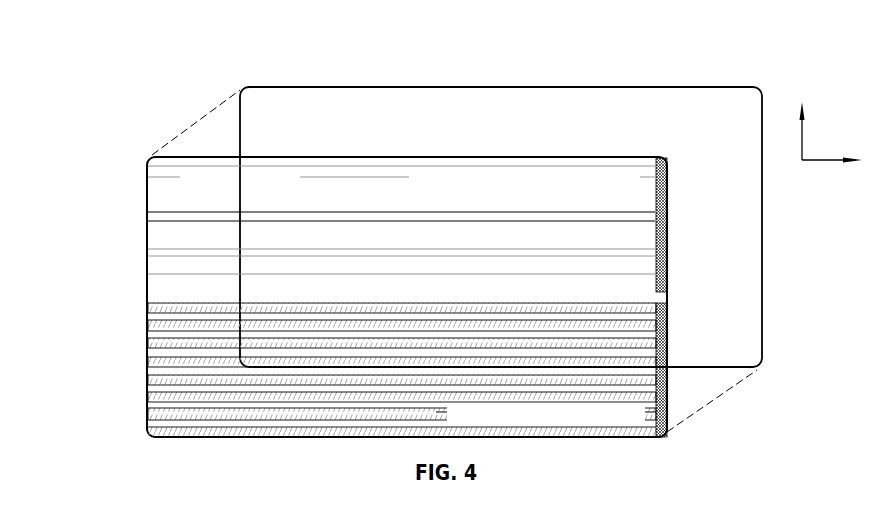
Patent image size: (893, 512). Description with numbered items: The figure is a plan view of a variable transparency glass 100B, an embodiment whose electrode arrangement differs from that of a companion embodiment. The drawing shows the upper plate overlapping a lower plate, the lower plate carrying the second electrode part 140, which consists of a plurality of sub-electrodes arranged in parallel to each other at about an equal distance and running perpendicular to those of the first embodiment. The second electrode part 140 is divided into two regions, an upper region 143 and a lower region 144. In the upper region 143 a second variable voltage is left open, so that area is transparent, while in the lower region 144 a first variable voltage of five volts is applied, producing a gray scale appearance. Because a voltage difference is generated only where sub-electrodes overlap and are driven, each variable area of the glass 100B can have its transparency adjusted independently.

The variable transparency glass 100B is at (452, 45).
The second electrode part 140 is at (66, 223).
The transparent region of lower plate (V2 open) 143 is at (123, 157).
The gray scale region of lower plate (V1 5V) 144 is at (123, 297).